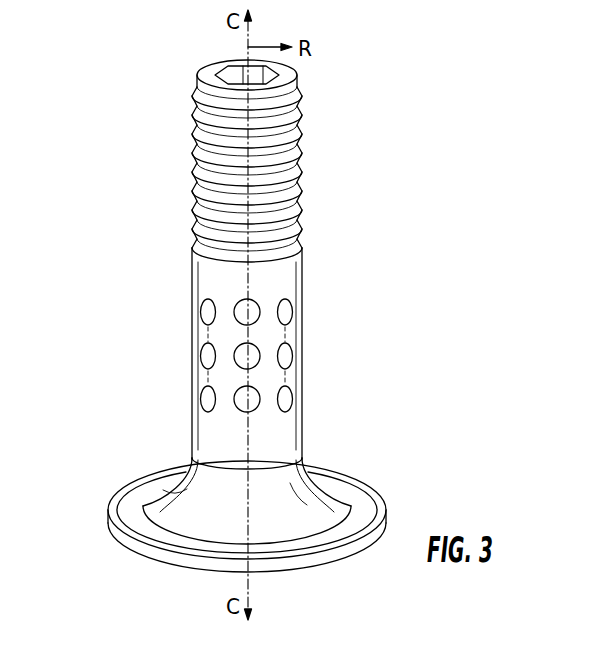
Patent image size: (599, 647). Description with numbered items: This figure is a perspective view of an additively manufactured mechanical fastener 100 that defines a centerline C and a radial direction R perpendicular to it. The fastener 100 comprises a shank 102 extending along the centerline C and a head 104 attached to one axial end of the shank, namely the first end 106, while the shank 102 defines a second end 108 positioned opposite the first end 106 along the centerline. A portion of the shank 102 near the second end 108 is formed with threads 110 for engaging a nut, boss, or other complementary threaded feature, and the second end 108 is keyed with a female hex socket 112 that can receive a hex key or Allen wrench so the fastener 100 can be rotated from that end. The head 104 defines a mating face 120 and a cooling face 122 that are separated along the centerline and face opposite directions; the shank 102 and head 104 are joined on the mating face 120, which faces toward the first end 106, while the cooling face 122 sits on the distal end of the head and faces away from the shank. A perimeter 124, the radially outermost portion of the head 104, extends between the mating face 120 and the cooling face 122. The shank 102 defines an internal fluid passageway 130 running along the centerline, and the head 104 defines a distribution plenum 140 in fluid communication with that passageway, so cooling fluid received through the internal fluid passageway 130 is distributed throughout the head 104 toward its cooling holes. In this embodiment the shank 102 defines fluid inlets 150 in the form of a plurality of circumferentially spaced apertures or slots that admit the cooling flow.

The fastener 100 is at (474, 116).
The shank 102 is at (183, 262).
The head 104 is at (389, 470).
The first end 106 is at (179, 453).
The second end 108 is at (188, 72).
The threads 110 is at (299, 209).
The female hex socket 112 is at (244, 75).
The mating face 120 is at (340, 463).
The cooling face 122 is at (356, 569).
The perimeter 124 is at (107, 512).
The internal fluid passageway 130 is at (282, 282).
The distribution plenum 140 is at (199, 516).
The fluid inlets 150 is at (298, 349).